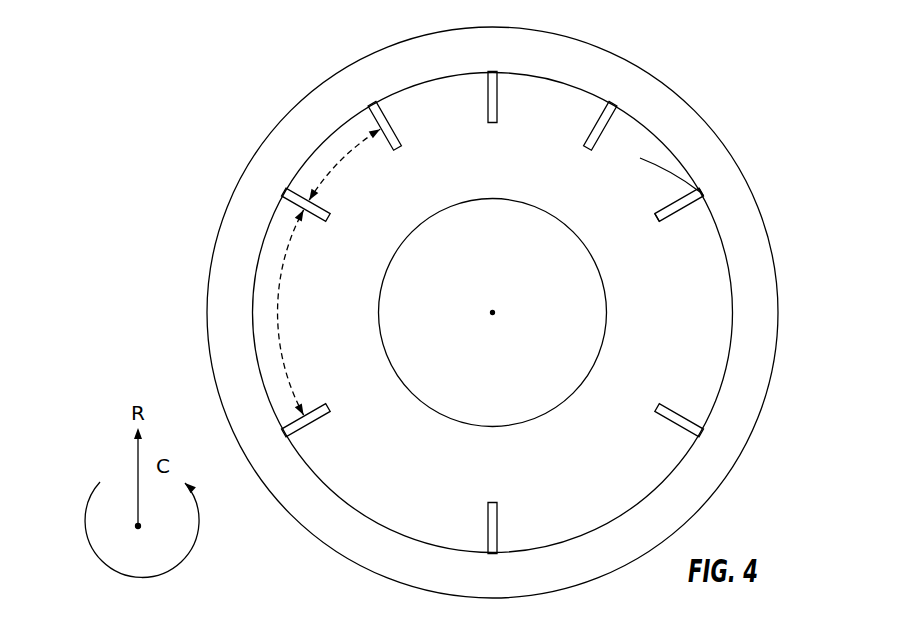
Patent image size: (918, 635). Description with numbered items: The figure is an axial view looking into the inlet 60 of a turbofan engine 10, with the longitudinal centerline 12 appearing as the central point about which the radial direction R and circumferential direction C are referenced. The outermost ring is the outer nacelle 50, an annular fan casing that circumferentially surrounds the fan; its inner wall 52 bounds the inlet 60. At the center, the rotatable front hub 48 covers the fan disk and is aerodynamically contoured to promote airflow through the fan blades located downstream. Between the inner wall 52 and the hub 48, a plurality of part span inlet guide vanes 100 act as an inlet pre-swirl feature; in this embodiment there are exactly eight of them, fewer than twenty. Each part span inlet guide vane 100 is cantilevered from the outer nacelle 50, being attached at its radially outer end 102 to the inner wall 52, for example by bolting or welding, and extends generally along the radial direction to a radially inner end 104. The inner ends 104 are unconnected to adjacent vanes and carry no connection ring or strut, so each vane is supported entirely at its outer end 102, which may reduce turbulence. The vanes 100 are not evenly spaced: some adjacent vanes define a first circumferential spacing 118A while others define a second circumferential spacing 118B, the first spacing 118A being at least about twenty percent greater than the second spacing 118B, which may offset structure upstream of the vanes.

The turbofan engine 10 is at (753, 127).
The longitudinal centerline 12 is at (493, 310).
The front hub 48 is at (563, 400).
The outer nacelle 50 is at (672, 112).
The inner wall 52 is at (666, 150).
The inlet 60 is at (545, 117).
The part span inlet guide vane 100 is at (677, 212).
The outer end 102 is at (703, 190).
The inner end 104 is at (657, 222).
The first circumferential spacing 118A is at (277, 313).
The second circumferential spacing 118B is at (340, 163).